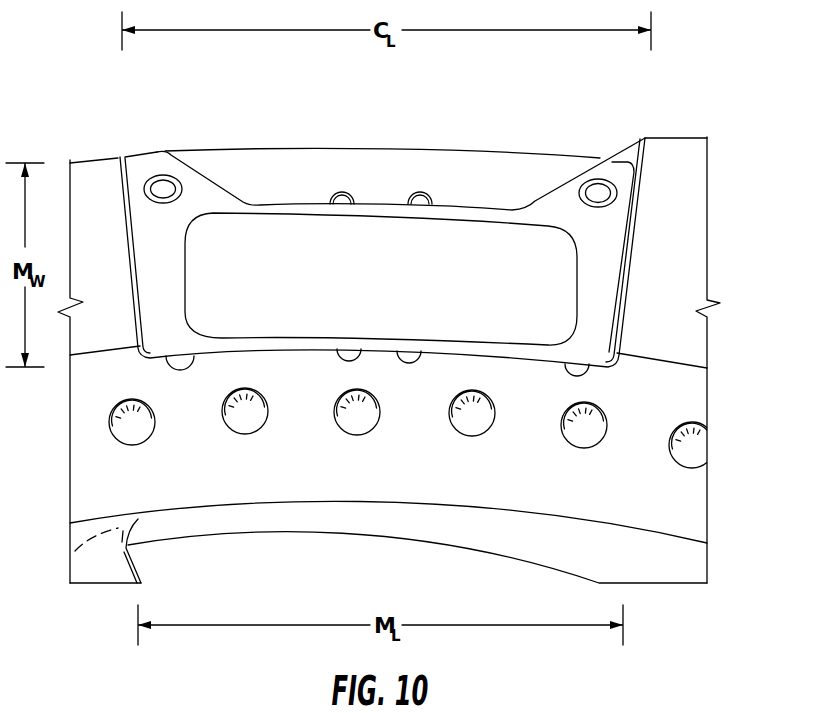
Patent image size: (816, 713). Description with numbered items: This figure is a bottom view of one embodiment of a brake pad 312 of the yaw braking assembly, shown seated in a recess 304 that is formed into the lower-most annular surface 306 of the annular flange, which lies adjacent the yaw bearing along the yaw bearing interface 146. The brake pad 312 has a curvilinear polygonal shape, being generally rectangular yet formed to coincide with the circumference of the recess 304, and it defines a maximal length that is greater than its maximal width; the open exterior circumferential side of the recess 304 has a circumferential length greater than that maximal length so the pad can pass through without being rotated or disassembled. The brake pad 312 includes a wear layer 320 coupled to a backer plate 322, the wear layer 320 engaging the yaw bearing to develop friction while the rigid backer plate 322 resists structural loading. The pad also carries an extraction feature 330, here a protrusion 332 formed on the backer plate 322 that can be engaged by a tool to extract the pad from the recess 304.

The yaw bearing interface 146 is at (686, 508).
The recess 304 is at (500, 173).
The lower-most annular surface 306 is at (692, 190).
The brake pad 312 is at (193, 211).
The wear layer 320 is at (252, 237).
The backer plate 322 is at (137, 173).
The extraction feature 330 is at (606, 172).
The protrusion 332 is at (610, 206).